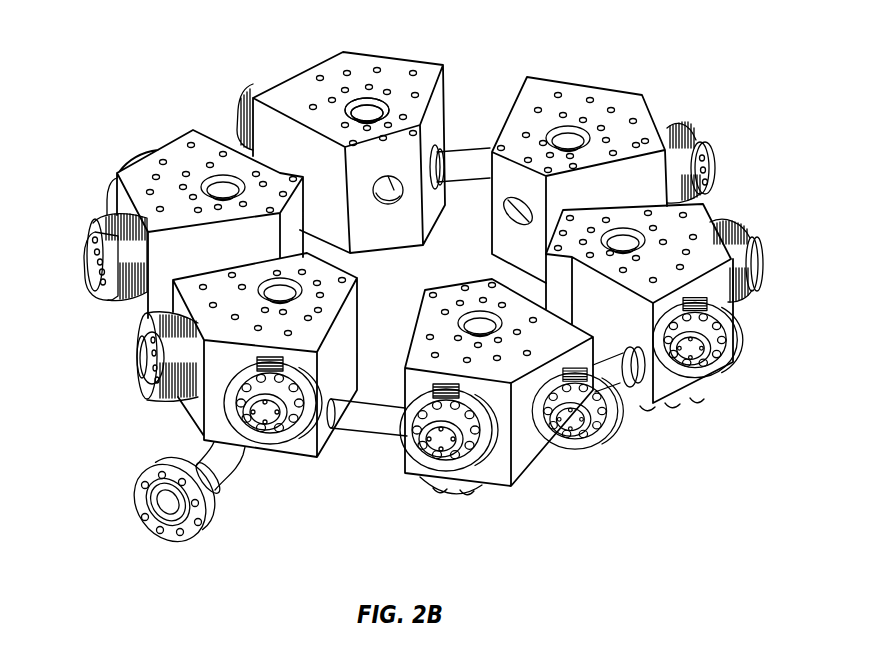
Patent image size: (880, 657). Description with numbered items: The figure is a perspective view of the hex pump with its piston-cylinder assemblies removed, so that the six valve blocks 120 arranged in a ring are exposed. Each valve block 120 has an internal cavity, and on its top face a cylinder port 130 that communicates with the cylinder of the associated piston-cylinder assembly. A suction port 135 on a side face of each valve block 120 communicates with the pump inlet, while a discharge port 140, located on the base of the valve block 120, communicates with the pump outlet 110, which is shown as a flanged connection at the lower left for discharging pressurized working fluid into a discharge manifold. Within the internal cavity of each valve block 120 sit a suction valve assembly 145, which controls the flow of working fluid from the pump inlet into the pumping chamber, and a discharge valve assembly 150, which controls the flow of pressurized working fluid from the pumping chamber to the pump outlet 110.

The pump outlet 110 is at (150, 506).
The valve block 120 is at (173, 153).
The cylinder port 130 is at (377, 100).
The suction port 135 is at (393, 203).
The discharge port 140 is at (416, 478).
The suction valve assembly 145 is at (603, 427).
The discharge valve assembly 150 is at (463, 460).